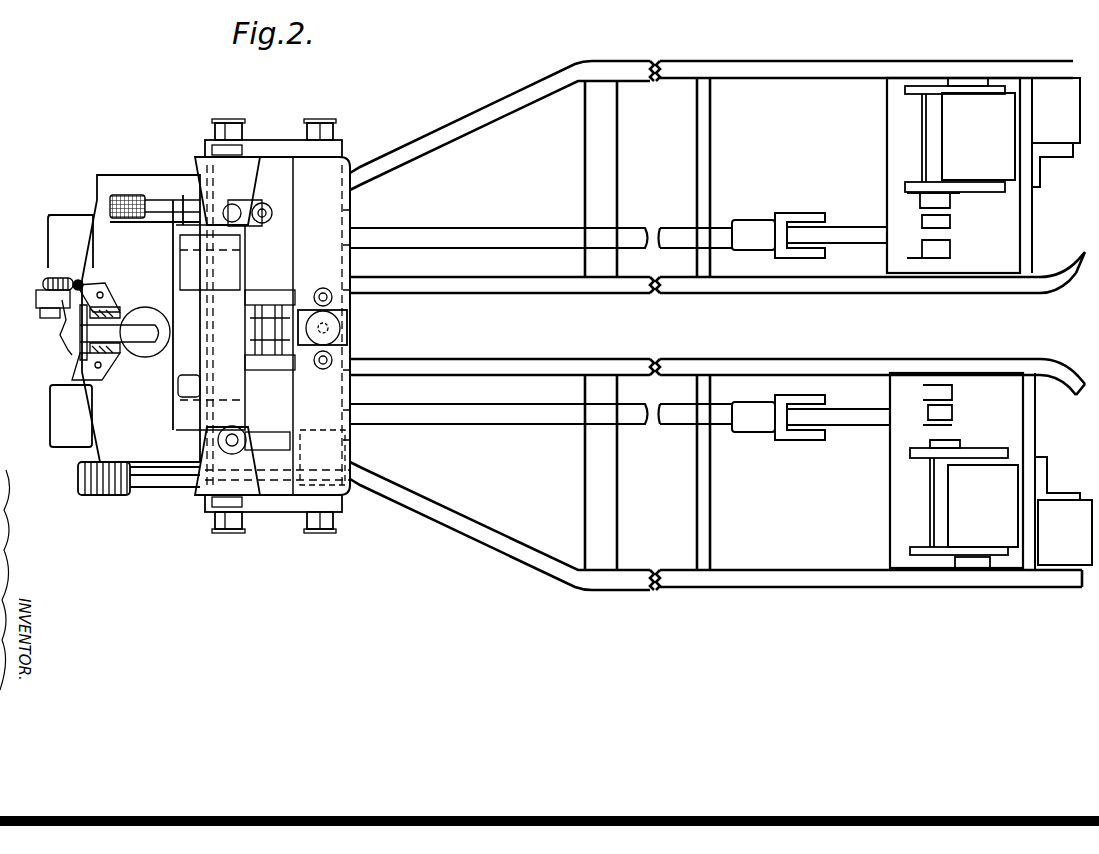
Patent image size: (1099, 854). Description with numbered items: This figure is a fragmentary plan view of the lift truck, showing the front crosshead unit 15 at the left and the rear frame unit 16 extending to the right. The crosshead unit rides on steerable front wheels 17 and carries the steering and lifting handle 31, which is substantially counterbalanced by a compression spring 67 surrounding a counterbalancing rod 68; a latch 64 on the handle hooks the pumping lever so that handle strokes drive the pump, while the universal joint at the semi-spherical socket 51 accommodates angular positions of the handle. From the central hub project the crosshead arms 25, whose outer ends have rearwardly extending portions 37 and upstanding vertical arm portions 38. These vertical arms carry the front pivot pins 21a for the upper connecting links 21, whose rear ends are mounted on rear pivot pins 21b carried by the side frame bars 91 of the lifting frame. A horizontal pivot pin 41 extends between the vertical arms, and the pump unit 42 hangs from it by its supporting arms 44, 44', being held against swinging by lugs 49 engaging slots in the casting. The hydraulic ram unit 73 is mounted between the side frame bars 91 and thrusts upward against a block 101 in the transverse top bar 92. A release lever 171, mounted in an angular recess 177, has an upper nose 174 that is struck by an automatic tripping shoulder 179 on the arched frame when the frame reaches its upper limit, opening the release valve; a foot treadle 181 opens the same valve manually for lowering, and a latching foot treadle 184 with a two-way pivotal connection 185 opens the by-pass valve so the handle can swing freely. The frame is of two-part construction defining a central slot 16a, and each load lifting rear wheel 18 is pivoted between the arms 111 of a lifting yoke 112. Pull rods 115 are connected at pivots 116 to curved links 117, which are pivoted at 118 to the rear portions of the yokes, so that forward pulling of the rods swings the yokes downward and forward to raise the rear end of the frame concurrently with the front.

The front crosshead unit 15 is at (80, 211).
The rear frame unit 16 is at (538, 76).
The central slot 16a is at (1025, 302).
The steerable front wheels 17 is at (55, 237).
The load lifting rear wheels 18 is at (988, 100).
The upper connecting links 21 is at (275, 140).
The front pivot pins 21a is at (222, 123).
The rear pivot pins 21b is at (326, 125).
The crosshead arms 25 is at (118, 259).
The steering and lifting handle 31 is at (78, 322).
The rearwardly extending portions 37 is at (120, 173).
The vertical arm portions 38 is at (198, 160).
The horizontal pivot pin 41 is at (215, 138).
The pump unit 42 is at (190, 298).
The supporting arm 44 is at (191, 326).
The supporting arm 44' is at (188, 257).
The lugs 49 is at (205, 290).
The semi-spherical socket 51 is at (152, 305).
The latch 64 is at (148, 340).
The compression spring 67 is at (42, 284).
The counterbalancing rod 68 is at (78, 280).
The hydraulic ram unit 73 is at (352, 348).
The side frame bars 91 is at (350, 158).
The transverse top bar 92 is at (348, 208).
The block 101 is at (348, 326).
The arms of lifting yoke 111 is at (938, 85).
The lifting yoke 112 is at (887, 141).
The pull rods 115 is at (510, 228).
The pivotal connection 116 is at (787, 215).
The curved links 117 is at (852, 228).
The pivotal connection 118 is at (940, 258).
The actuating lever 171 is at (268, 425).
The upper nose 174 is at (352, 440).
The angular recess 177 is at (270, 440).
The automatic tripping shoulder 179 is at (352, 461).
The foot treadle 181 is at (84, 498).
The latching foot treadle 184 is at (112, 196).
The two-way pivotal connection 185 is at (262, 222).